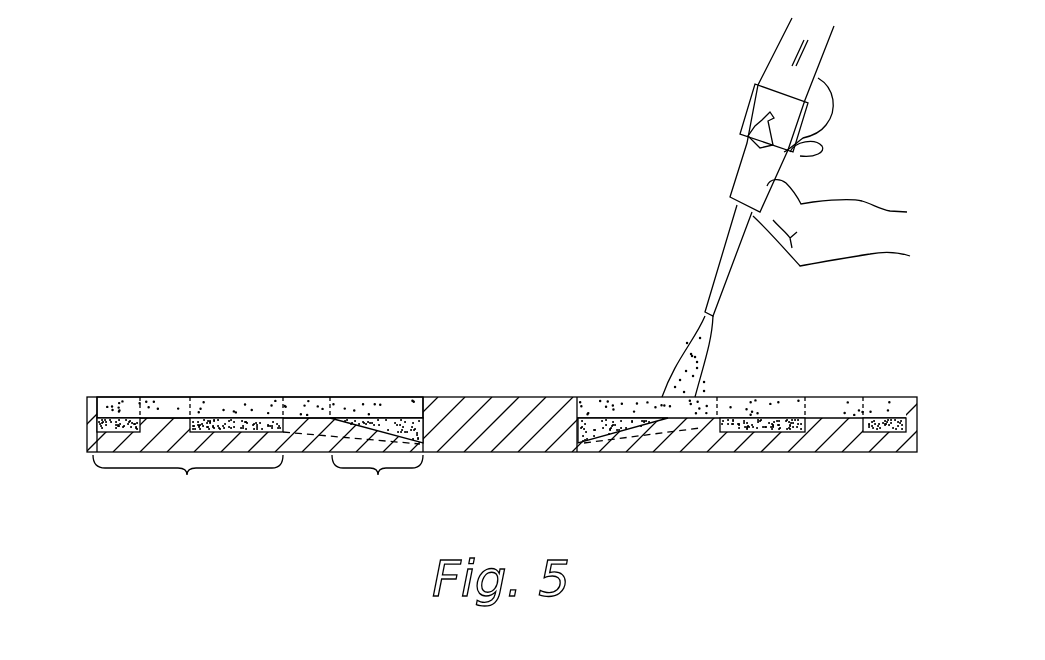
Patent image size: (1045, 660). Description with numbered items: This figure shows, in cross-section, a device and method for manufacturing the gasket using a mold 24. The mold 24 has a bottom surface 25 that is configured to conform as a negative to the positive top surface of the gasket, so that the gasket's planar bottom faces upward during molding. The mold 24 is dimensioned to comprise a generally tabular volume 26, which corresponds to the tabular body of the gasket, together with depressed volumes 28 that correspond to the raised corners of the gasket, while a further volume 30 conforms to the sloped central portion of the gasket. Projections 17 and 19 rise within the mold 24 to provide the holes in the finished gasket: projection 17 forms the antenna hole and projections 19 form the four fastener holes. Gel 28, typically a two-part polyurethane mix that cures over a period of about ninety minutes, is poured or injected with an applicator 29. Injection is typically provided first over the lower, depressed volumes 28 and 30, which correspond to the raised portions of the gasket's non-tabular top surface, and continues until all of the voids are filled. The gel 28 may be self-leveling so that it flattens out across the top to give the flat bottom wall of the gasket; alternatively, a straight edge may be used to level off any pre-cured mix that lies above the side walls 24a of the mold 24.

The projection 17 is at (508, 398).
The projections 19 is at (167, 400).
The mold 24 is at (686, 476).
The side walls 24a is at (85, 412).
The bottom surface 25 is at (620, 430).
The volume 26 is at (122, 410).
The gel 28 is at (676, 357).
The applicator 29 is at (740, 163).
The volume 30 is at (376, 464).